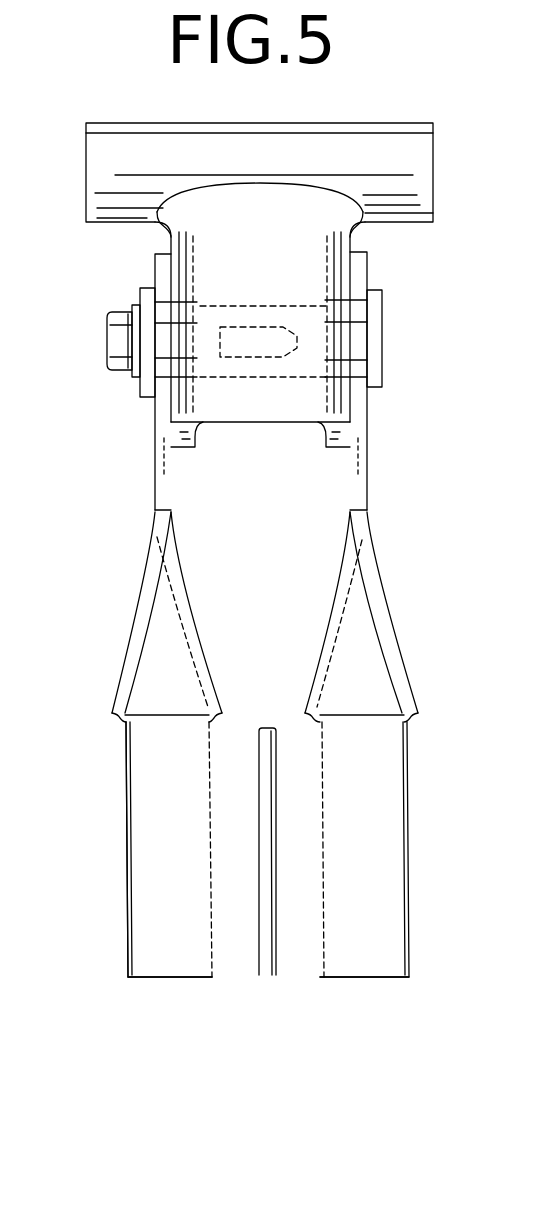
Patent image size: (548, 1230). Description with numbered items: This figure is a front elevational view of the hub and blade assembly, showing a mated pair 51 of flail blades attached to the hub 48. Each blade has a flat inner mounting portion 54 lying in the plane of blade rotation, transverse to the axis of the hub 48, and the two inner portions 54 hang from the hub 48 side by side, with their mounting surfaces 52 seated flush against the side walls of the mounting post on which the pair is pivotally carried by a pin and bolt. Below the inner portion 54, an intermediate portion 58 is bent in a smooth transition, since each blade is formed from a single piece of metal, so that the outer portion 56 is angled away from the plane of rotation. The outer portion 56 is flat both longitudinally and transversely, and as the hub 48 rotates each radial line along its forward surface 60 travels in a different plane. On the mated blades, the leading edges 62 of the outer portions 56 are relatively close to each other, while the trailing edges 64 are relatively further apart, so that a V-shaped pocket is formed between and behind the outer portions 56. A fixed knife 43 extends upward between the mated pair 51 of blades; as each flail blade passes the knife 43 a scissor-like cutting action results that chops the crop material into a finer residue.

The knife 43 is at (257, 745).
The hub 48 is at (107, 167).
The mated pair of flail blades 51 is at (383, 498).
The mounting surface 52 is at (339, 453).
The inner mounting portion 54 is at (163, 411).
The outer portion 56 is at (160, 797).
The intermediate portion 58 is at (168, 614).
The forward surface 60 is at (184, 896).
The leading edge 62 is at (210, 930).
The trailing edge 64 is at (127, 762).